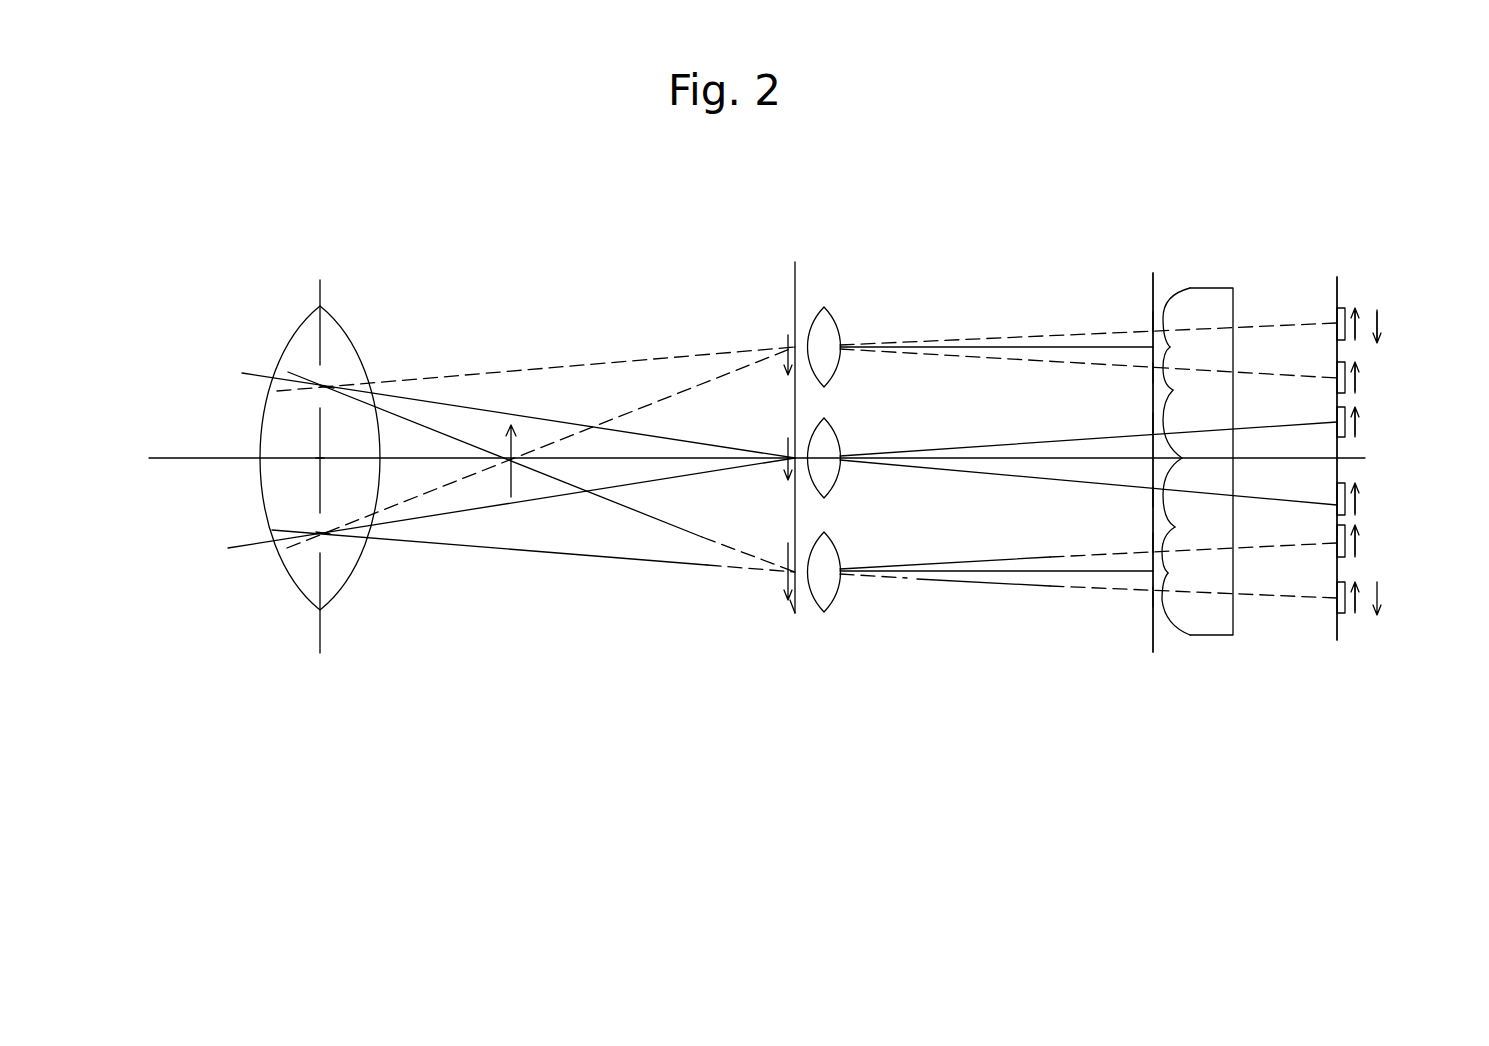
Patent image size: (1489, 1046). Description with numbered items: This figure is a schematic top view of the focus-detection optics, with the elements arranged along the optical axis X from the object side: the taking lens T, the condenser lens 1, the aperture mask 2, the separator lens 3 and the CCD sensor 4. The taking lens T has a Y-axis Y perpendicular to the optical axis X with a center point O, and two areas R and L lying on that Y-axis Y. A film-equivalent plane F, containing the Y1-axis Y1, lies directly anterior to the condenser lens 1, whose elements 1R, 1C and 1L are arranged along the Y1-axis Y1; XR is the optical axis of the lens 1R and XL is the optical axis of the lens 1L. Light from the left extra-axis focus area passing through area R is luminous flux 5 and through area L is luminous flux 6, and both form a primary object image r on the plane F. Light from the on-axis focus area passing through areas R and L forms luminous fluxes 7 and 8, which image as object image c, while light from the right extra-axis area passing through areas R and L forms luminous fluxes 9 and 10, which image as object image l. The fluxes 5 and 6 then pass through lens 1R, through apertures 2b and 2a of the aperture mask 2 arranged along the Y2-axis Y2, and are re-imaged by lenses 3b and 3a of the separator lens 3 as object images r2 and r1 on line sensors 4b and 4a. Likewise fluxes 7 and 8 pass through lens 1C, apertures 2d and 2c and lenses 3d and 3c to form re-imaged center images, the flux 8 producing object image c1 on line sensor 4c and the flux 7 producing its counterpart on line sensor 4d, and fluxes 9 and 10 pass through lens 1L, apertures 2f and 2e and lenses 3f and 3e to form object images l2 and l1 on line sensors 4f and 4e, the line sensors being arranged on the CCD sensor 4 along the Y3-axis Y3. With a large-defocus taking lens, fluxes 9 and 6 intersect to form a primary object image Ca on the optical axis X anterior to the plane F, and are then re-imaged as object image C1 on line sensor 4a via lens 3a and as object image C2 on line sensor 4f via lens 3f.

The condenser lens 1 is at (856, 516).
The lens 1R of the condenser lens 1R is at (830, 367).
The lens 1C of the condenser lens 1C is at (830, 478).
The lens 1L of the condenser lens 1L is at (830, 590).
The aperture mask 2 is at (1153, 636).
The aperture 2a is at (1153, 322).
The aperture 2b is at (1153, 373).
The aperture 2c is at (1153, 423).
The aperture 2d is at (1153, 497).
The aperture 2e is at (1153, 543).
The aperture 2f is at (1153, 597).
The separator lens 3 is at (1208, 475).
The lens 3a of the separator lens 3a is at (1177, 307).
The lens 3b of the separator lens 3b is at (1178, 366).
The lens 3c of the separator lens 3c is at (1177, 413).
The lens 3d of the separator lens 3d is at (1173, 507).
The lens 3e of the separator lens 3e is at (1173, 558).
The lens 3f of the separator lens 3f is at (1175, 608).
The CCD sensor 4 is at (1314, 493).
The line sensor 4a is at (1337, 308).
The line sensor 4b is at (1338, 365).
The line sensor 4c is at (1337, 427).
The line sensor 4d is at (1337, 488).
The line sensor 4e is at (1337, 555).
The line sensor 4f is at (1337, 612).
The luminous flux 5 is at (663, 358).
The luminous flux 6 is at (635, 408).
The luminous flux 7 is at (685, 441).
The luminous flux 8 is at (674, 478).
The luminous flux 9 is at (640, 510).
The luminous flux 10 is at (614, 549).
The taking lens T is at (297, 572).
The center point O is at (320, 458).
The area R is at (336, 366).
The area L is at (333, 556).
The object image Ca is at (503, 485).
The film-equivalent plane F is at (786, 604).
The optical axis X is at (175, 460).
The Y-axis Y is at (320, 280).
The Y1-axis Y1 is at (795, 266).
The Y2-axis Y2 is at (1153, 273).
The Y3-axis Y3 is at (1337, 277).
The optical axis of condenser lens 1R XR is at (995, 345).
The optical axis of condenser lens 1L XL is at (997, 575).
The object image r is at (777, 366).
The object image c is at (776, 470).
The object image l is at (779, 578).
The object image r1 is at (1372, 305).
The object image r2 is at (1357, 382).
The object image c1 is at (1358, 425).
The object image C1 is at (1385, 325).
The object image C2 is at (1358, 502).
The object image l1 is at (1357, 542).
The object image l2 is at (1357, 607).